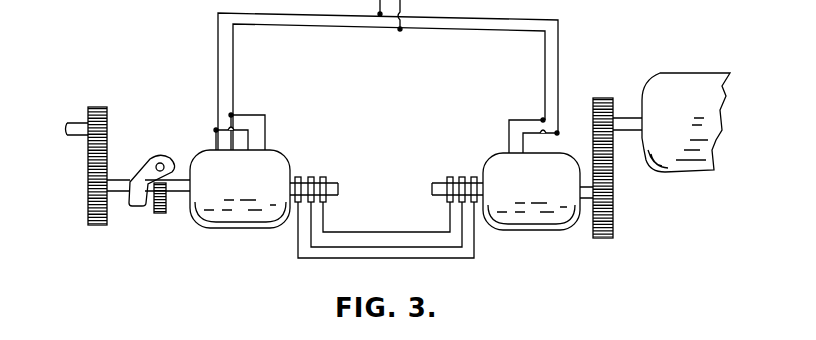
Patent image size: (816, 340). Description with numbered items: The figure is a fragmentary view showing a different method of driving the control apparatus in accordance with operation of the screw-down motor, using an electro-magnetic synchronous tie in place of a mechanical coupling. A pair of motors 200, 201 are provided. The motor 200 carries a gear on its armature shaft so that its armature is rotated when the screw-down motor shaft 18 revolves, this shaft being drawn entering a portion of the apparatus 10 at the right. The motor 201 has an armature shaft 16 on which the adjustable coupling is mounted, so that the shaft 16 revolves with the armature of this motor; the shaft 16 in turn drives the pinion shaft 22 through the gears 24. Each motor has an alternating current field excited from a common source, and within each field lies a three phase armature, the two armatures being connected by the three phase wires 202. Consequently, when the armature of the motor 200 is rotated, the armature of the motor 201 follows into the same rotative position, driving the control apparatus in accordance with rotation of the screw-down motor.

The housing member 10 is at (694, 82).
The armature shaft 16 is at (112, 190).
The screw-down motor shaft 18 is at (620, 121).
The pinion shaft 22 is at (75, 123).
The gears 24 is at (107, 158).
The motor 200 is at (531, 174).
The motor 201 is at (240, 170).
The three phase wires 202 is at (397, 231).